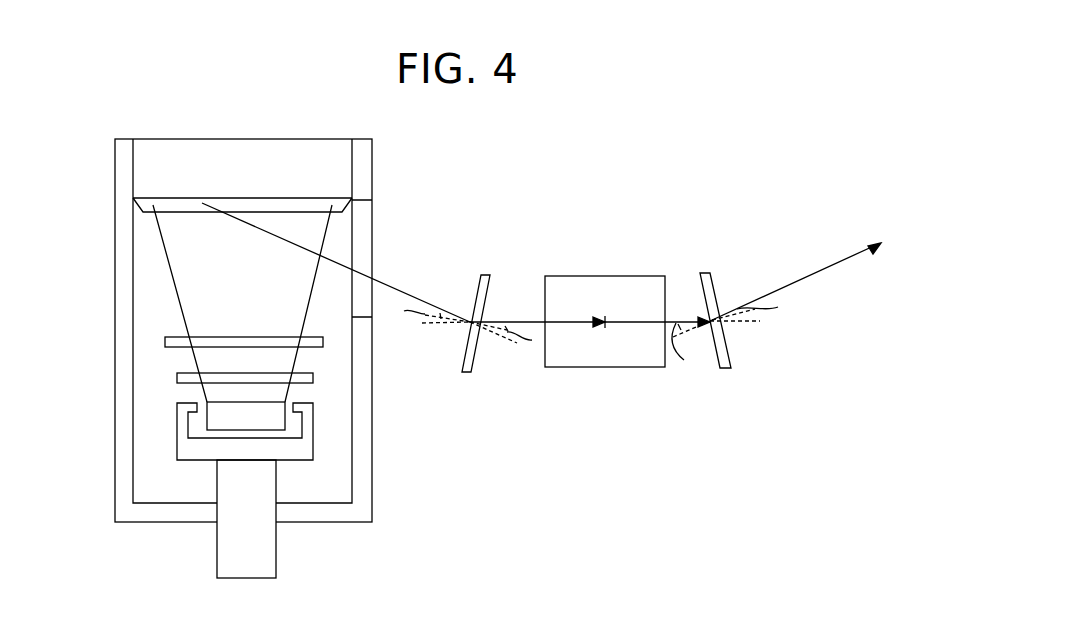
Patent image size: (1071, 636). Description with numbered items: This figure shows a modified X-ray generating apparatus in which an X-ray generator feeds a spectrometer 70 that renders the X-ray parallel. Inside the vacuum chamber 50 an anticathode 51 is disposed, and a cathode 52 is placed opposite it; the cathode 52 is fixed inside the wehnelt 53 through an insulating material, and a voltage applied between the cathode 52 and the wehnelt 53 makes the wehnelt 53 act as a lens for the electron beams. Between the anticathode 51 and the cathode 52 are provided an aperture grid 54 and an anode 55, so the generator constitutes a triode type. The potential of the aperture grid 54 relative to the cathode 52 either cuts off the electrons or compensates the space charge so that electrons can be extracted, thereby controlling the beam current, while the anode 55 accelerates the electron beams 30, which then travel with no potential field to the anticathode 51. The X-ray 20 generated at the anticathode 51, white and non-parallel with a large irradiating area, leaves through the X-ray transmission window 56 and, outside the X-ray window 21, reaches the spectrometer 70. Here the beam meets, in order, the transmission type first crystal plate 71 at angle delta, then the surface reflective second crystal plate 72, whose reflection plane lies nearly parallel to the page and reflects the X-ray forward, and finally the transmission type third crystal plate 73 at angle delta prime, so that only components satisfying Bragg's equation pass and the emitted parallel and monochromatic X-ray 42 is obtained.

The spectrometer 70 is at (688, 127).
The vacuum chamber 50 is at (365, 422).
The anticathode 51 is at (140, 173).
The electron beams 30 is at (187, 297).
The anode 55 is at (173, 343).
The aperture grid 54 is at (187, 380).
The cathode 52 is at (277, 422).
The wehnelt 53 is at (295, 448).
The X-ray transmission window 56 is at (362, 285).
The X-ray 20 is at (413, 297).
The first crystal plate 71 is at (482, 270).
The X-ray window 21 is at (568, 318).
The second crystal plate 72 is at (632, 363).
The third crystal plate 73 is at (727, 354).
The emitted parallel monochromatic X-ray 42 is at (827, 270).